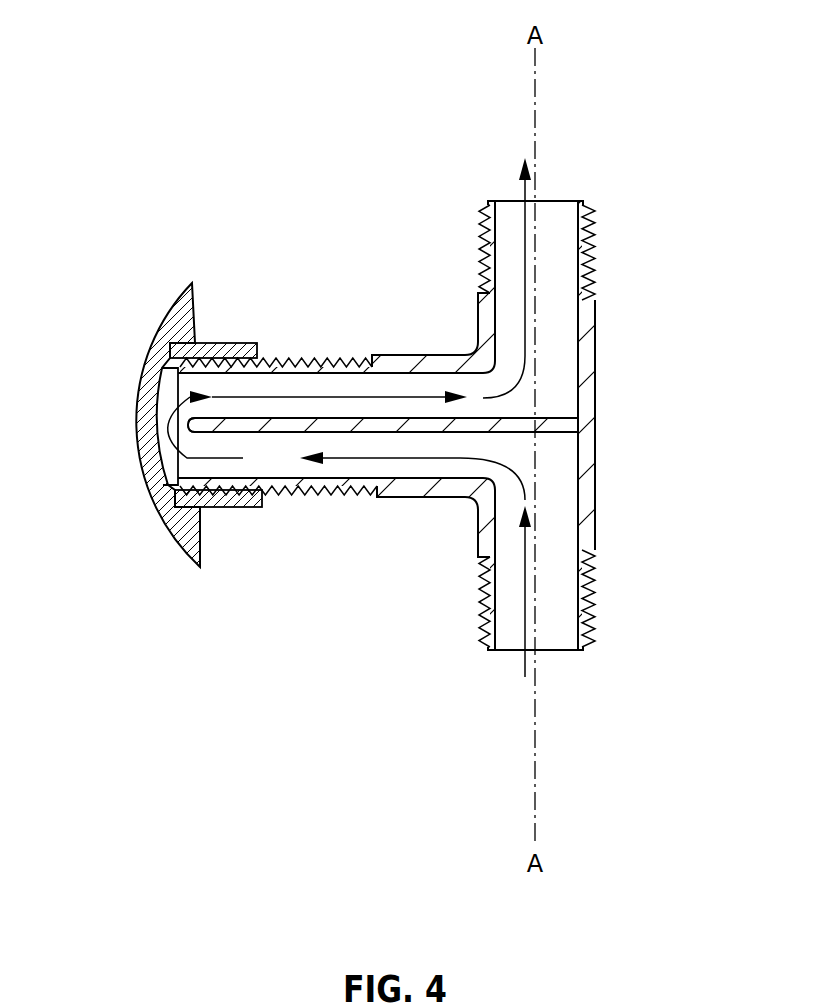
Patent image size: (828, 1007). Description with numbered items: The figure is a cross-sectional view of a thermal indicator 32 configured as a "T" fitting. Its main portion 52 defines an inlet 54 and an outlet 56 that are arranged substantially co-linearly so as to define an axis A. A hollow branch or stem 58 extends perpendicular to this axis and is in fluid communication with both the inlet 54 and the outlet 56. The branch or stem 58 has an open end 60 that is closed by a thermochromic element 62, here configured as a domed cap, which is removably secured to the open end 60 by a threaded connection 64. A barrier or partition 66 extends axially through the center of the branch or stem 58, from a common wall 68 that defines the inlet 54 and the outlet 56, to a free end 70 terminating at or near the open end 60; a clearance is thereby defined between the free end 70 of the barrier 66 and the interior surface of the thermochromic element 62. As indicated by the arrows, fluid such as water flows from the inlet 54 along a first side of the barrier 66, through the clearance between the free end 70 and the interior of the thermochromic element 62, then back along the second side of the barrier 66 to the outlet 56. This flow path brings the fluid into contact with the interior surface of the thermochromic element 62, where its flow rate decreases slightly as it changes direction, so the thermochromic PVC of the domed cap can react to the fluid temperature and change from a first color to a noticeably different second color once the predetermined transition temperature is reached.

The thermal indicator 32 is at (358, 282).
The main portion 52 is at (598, 357).
The inlet 54 is at (565, 643).
The outlet 56 is at (558, 208).
The branch or stem 58 is at (413, 495).
The open end 60 is at (157, 383).
The thermochromic element 62 is at (147, 480).
The threaded connection 64 is at (238, 492).
The barrier or partition 66 is at (547, 416).
The common wall 68 is at (600, 467).
The free end 70 is at (187, 430).